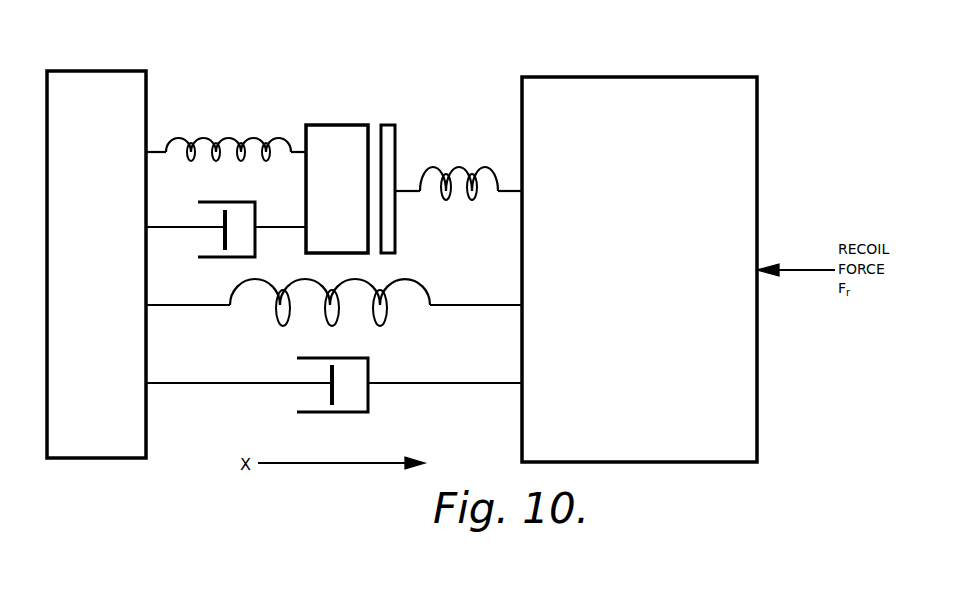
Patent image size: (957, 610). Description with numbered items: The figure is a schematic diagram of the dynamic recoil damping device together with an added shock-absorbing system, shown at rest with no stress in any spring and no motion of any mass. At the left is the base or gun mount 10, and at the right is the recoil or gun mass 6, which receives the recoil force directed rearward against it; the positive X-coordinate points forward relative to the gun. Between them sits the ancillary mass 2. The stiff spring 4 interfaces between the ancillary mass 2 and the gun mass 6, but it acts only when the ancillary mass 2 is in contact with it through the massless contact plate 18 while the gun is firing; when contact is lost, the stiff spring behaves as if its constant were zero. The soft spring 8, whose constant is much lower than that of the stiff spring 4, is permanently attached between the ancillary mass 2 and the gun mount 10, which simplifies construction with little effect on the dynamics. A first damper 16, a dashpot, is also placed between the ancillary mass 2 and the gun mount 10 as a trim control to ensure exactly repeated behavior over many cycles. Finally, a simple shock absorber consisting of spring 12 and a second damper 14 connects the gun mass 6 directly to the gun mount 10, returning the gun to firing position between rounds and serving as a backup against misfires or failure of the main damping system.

The gun mount 10 is at (107, 71).
The gun mass 6 is at (645, 85).
The soft spring 8 is at (235, 138).
The ancillary mass 2 is at (338, 125).
The contact plate 18 is at (389, 125).
The stiff spring 4 is at (440, 168).
The first damper 16 is at (220, 257).
The spring 12 is at (417, 285).
The second damper 14 is at (368, 395).